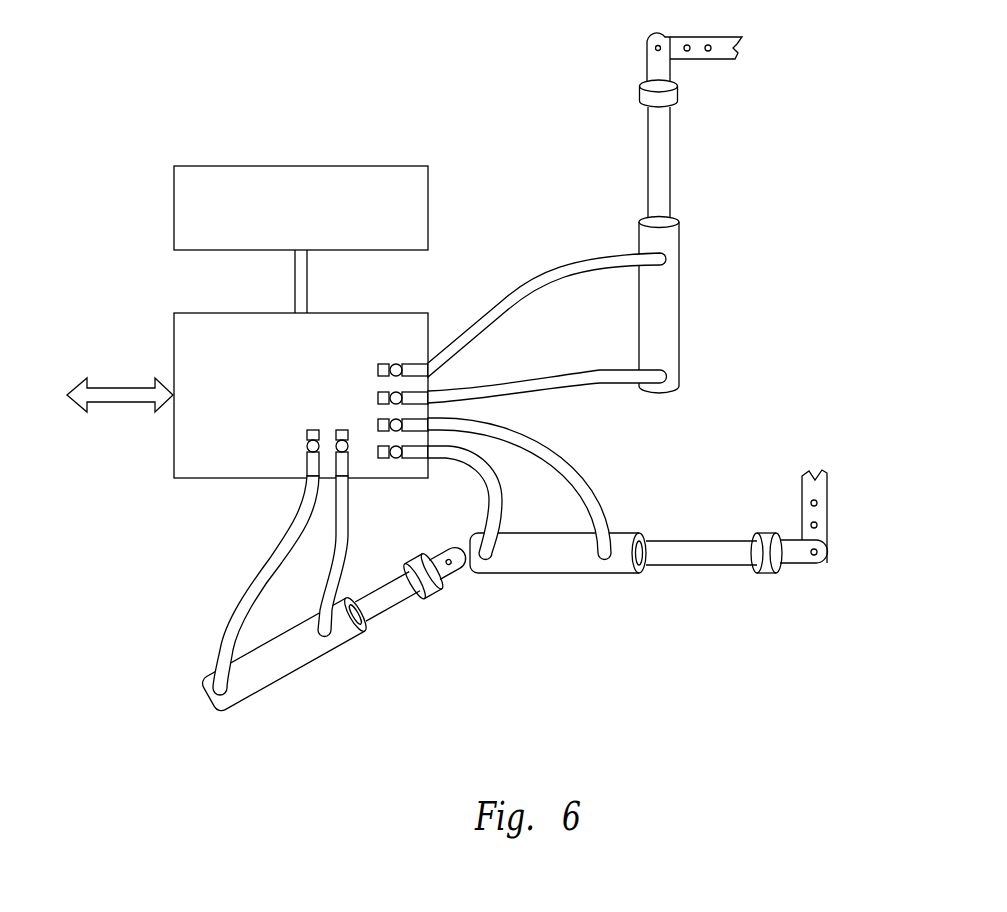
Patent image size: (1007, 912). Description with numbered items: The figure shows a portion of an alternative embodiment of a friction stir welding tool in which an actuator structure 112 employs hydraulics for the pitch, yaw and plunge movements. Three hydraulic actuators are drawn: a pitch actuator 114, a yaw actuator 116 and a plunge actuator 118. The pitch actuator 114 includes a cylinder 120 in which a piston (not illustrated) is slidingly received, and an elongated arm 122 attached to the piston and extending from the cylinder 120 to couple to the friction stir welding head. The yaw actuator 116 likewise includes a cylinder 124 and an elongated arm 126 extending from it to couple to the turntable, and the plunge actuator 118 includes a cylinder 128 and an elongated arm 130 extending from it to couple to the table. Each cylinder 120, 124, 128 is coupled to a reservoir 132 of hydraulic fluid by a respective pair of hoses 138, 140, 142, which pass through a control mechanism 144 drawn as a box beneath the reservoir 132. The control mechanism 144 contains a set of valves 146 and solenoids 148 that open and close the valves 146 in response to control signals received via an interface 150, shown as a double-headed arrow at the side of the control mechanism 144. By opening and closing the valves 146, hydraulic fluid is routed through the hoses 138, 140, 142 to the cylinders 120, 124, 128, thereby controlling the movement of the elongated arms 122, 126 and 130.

The actuator structure 112 is at (855, 266).
The pitch actuator 114 is at (757, 160).
The yaw actuator 116 is at (677, 617).
The plunge actuator 118 is at (369, 687).
The cylinder 120 is at (664, 291).
The elongated arm 122 is at (740, 97).
The cylinder 124 is at (575, 560).
The elongated arm 126 is at (692, 552).
The cylinder 128 is at (270, 660).
The elongated arm 130 is at (390, 595).
The reservoir 132 is at (430, 206).
The hoses 138 is at (567, 272).
The hoses 140 is at (568, 462).
The hoses 142 is at (332, 547).
The control mechanism 144 is at (398, 325).
The valves 146 is at (397, 451).
The solenoids 148 is at (342, 430).
The interface 150 is at (117, 395).